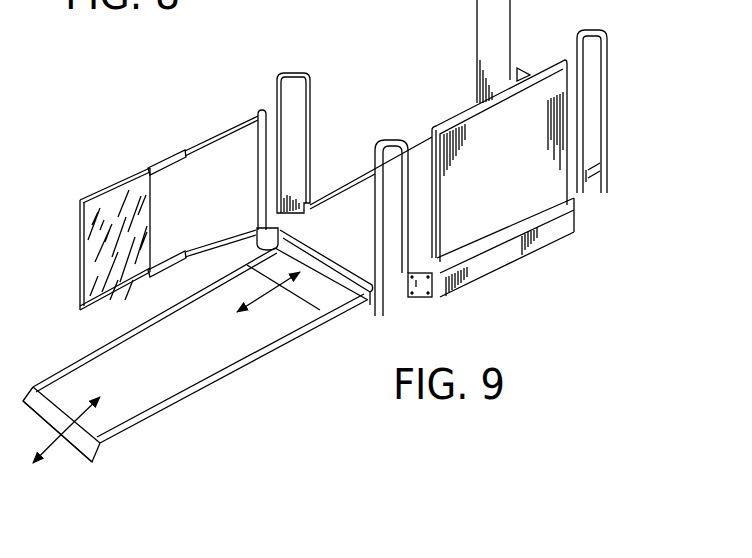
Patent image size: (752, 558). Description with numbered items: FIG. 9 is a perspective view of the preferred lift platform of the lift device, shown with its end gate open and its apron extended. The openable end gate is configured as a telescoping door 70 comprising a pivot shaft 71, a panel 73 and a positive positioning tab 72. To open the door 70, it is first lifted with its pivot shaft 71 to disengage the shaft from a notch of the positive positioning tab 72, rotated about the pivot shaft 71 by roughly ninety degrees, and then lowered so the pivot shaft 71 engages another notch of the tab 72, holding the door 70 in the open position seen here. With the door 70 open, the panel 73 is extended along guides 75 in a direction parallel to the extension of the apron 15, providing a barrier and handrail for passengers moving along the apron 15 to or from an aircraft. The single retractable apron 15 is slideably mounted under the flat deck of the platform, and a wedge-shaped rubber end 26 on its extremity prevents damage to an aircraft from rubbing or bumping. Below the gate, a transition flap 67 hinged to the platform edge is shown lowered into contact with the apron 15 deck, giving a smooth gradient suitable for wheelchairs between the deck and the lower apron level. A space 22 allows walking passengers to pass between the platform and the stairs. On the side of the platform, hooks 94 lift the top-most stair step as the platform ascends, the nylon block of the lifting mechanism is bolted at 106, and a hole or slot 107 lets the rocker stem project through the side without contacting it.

The telescoping door 70 is at (125, 157).
The panel 73 is at (111, 190).
The guides 75 is at (162, 150).
The pivot shaft 71 is at (275, 99).
The positive positioning tab 72 is at (252, 233).
The hooks 94 is at (335, 180).
The space 22 is at (462, 15).
The bolting location of nylon block 106 is at (437, 304).
The hole or slot 107 is at (418, 299).
The apron 15 is at (235, 388).
The wedge-shaped rubber ends 26 is at (107, 464).
The transition flap 67 is at (318, 292).